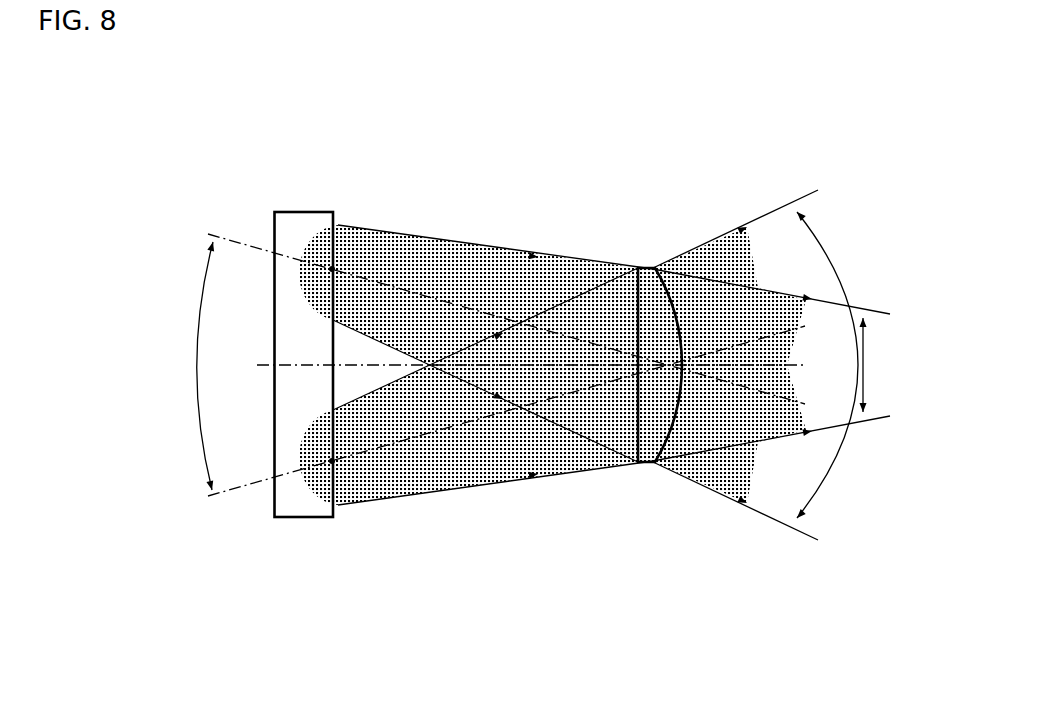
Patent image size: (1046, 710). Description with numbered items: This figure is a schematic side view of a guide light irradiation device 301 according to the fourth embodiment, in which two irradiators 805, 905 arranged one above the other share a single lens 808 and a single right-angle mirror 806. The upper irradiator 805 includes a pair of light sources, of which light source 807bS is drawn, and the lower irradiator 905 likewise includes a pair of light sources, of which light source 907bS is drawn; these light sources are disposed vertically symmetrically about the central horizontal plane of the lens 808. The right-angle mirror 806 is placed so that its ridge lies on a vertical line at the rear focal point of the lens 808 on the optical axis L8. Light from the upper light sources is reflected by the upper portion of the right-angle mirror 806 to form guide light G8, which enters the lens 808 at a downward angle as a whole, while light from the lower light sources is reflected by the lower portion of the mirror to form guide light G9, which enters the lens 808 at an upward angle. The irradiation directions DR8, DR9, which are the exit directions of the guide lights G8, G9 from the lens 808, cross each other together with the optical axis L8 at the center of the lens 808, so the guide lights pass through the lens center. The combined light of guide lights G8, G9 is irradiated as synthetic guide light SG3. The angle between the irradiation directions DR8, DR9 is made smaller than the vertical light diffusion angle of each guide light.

The guide light irradiation device 301 is at (101, 119).
The irradiator 805 is at (115, 228).
The irradiator 905 is at (106, 496).
The right-angle mirror 806 is at (290, 517).
The light source 807bS is at (332, 269).
The light source 907bS is at (332, 461).
The lens 808 is at (645, 268).
The irradiation direction DR8 is at (262, 250).
The irradiation direction DR9 is at (262, 481).
The optical axis L8 is at (510, 371).
The guide light G8 is at (594, 318).
The guide light G9 is at (594, 418).
The synthetic guide light SG3 is at (735, 342).